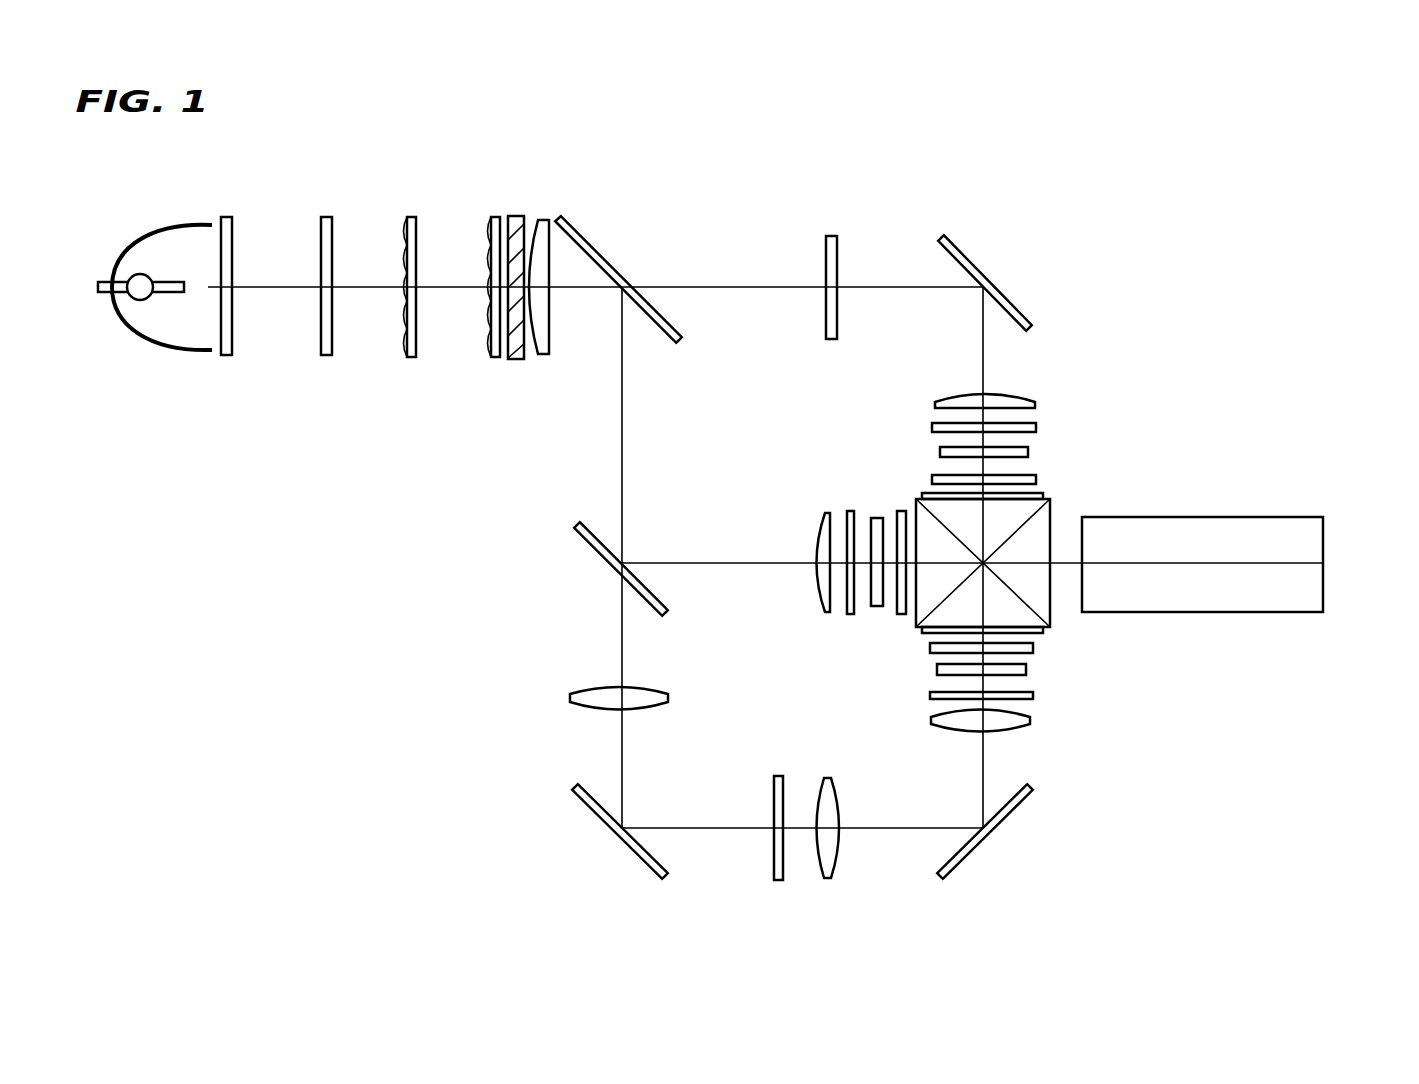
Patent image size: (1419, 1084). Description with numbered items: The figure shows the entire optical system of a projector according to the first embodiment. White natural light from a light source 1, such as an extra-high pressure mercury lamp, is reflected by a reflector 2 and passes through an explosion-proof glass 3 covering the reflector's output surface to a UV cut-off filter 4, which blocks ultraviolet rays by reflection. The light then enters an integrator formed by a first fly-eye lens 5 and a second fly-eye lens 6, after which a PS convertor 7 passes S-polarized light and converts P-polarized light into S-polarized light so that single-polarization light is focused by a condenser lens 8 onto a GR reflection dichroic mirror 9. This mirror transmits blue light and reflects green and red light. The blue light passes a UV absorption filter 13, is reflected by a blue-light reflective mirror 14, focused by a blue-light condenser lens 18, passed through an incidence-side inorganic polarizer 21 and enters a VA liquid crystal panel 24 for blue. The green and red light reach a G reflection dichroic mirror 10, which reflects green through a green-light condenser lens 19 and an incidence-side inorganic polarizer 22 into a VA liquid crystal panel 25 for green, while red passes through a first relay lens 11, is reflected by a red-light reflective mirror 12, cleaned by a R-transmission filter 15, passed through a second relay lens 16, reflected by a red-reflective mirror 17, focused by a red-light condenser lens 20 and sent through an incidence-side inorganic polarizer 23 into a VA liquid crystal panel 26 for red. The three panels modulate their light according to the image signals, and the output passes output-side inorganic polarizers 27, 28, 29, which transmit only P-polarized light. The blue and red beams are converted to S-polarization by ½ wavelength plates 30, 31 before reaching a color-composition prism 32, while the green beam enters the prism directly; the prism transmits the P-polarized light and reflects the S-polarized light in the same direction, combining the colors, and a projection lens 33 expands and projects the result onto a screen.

The light source 1 is at (142, 300).
The reflector 2 is at (155, 230).
The explosion-proof glass 3 is at (224, 358).
The UV cut-off filter 4 is at (324, 358).
The first fly-eye lens 5 is at (411, 215).
The second fly-eye lens 6 is at (497, 215).
The PS convertor 7 is at (516, 361).
The condenser lens 8 is at (540, 356).
The GR reflection dichroic mirror 9 is at (588, 248).
The G reflection dichroic mirror 10 is at (596, 550).
The first relay lens 11 is at (570, 696).
The red-light reflective mirror 12 is at (573, 786).
The UV absorption filter 13 is at (830, 234).
The blue-light reflective mirror 14 is at (976, 268).
The R-transmission filter 15 is at (780, 774).
The second relay lens 16 is at (830, 795).
The red-reflective mirror 17 is at (975, 848).
The blue-light condenser lens 18 is at (1000, 396).
The green-light condenser lens 19 is at (818, 545).
The red-light condenser lens 20 is at (1005, 730).
The incidence-side inorganic polarizer 21 is at (1036, 428).
The incidence-side inorganic polarizer 22 is at (850, 512).
The incidence-side inorganic polarizer 23 is at (1034, 698).
The VA liquid crystal panel 24 is at (1028, 452).
The VA liquid crystal panel 25 is at (878, 518).
The VA liquid crystal panel 26 is at (1028, 670).
The output-side inorganic polarizer 27 is at (1036, 480).
The output-side inorganic polarizer 28 is at (900, 615).
The output-side inorganic polarizer 29 is at (1035, 650).
The ½ wavelength plate 30 is at (1045, 496).
The ½ wavelength plate 31 is at (1045, 631).
The color-composition prism 32 is at (926, 512).
The projection lens 33 is at (1324, 536).